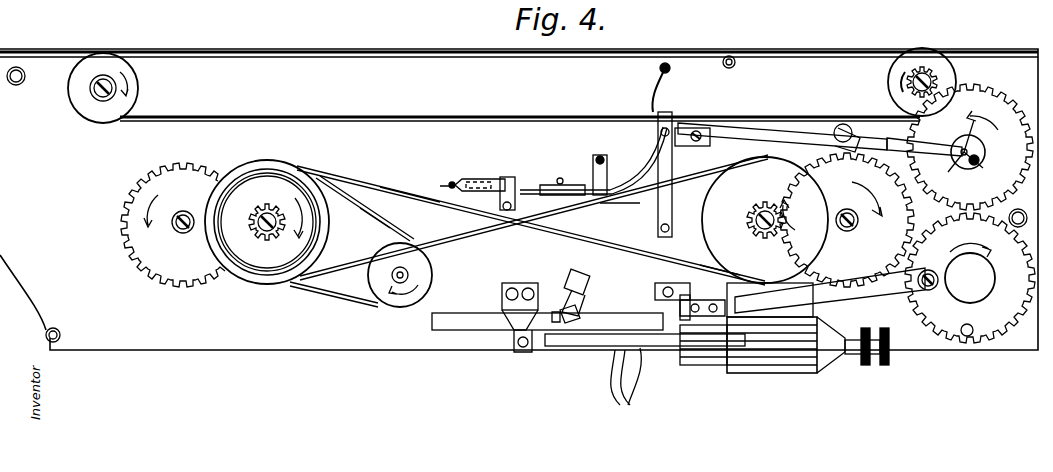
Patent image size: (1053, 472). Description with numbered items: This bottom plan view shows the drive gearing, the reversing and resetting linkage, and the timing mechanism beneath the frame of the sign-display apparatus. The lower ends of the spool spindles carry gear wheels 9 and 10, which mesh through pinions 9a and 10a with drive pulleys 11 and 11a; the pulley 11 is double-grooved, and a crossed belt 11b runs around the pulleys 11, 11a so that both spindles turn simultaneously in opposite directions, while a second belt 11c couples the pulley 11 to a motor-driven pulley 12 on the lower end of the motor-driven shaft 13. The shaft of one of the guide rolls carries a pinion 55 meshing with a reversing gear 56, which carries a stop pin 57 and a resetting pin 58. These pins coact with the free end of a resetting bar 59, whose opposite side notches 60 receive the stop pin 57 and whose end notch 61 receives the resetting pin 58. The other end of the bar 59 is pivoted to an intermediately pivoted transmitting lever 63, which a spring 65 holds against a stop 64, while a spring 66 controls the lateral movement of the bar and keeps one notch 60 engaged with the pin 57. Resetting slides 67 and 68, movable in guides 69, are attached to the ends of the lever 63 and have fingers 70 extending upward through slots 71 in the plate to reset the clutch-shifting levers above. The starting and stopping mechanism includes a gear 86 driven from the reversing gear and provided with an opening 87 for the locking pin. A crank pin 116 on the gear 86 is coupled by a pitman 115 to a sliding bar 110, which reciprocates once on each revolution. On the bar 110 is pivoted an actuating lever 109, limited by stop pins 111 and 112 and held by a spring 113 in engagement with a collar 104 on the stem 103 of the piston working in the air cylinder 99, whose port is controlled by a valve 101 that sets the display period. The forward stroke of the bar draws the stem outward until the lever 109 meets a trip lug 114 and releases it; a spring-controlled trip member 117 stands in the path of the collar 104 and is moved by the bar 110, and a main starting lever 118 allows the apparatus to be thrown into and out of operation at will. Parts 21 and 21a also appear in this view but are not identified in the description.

The gear wheel 9 is at (186, 286).
The pinion 9a is at (268, 230).
The gear wheel 10 is at (847, 220).
The pinion 10a is at (772, 212).
The drive pulley 11 is at (282, 280).
The drive pulley 11a is at (738, 178).
The crossed belt 11b is at (410, 180).
The belt 11c is at (356, 222).
The motor-driven pulley 12 is at (430, 268).
The motor-driven shaft 13 is at (418, 280).
The band pulley 21 is at (140, 82).
The band 21a is at (549, 60).
The pinion 55 is at (938, 84).
The reversing gear 56 is at (1000, 112).
The stop pin 57 is at (974, 131).
The resetting pin 58 is at (986, 153).
The resetting bar 59 is at (926, 160).
The side notches 60 is at (958, 150).
The end notch 61 is at (978, 163).
The transmitting lever 63 is at (674, 152).
The stop 64 is at (706, 130).
The spring 65 is at (652, 92).
The spring 66 is at (846, 128).
The resetting slide 67 is at (646, 166).
The resetting slide 68 is at (485, 178).
The guides 69 is at (512, 178).
The fingers 70 is at (452, 182).
The slots 71 is at (450, 188).
The gear 86 is at (1000, 318).
The opening 87 is at (967, 338).
The cylinder 99 is at (727, 374).
The valve 101 is at (878, 366).
The stem 103 is at (585, 350).
The collar 104 is at (612, 370).
The actuating lever 109 is at (551, 338).
The sliding bar 110 is at (493, 333).
The stop pin 111 is at (562, 304).
The stop pin 112 is at (548, 312).
The spring 113 is at (603, 297).
The trip lug 114 is at (570, 288).
The pitman 115 is at (850, 297).
The crank pin 116 is at (934, 292).
The trip member 117 is at (658, 290).
The main controlling lever 118 is at (640, 392).